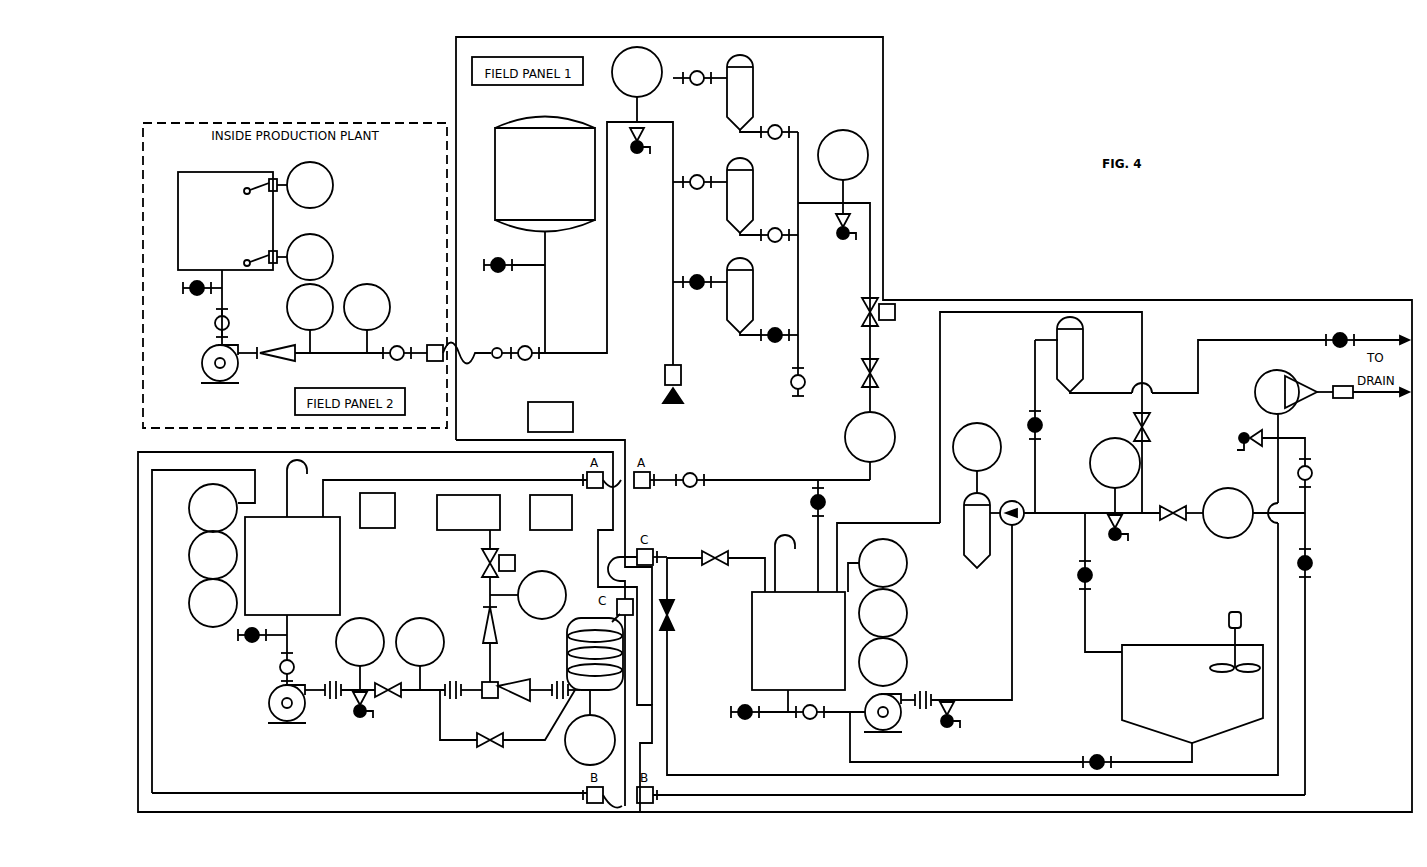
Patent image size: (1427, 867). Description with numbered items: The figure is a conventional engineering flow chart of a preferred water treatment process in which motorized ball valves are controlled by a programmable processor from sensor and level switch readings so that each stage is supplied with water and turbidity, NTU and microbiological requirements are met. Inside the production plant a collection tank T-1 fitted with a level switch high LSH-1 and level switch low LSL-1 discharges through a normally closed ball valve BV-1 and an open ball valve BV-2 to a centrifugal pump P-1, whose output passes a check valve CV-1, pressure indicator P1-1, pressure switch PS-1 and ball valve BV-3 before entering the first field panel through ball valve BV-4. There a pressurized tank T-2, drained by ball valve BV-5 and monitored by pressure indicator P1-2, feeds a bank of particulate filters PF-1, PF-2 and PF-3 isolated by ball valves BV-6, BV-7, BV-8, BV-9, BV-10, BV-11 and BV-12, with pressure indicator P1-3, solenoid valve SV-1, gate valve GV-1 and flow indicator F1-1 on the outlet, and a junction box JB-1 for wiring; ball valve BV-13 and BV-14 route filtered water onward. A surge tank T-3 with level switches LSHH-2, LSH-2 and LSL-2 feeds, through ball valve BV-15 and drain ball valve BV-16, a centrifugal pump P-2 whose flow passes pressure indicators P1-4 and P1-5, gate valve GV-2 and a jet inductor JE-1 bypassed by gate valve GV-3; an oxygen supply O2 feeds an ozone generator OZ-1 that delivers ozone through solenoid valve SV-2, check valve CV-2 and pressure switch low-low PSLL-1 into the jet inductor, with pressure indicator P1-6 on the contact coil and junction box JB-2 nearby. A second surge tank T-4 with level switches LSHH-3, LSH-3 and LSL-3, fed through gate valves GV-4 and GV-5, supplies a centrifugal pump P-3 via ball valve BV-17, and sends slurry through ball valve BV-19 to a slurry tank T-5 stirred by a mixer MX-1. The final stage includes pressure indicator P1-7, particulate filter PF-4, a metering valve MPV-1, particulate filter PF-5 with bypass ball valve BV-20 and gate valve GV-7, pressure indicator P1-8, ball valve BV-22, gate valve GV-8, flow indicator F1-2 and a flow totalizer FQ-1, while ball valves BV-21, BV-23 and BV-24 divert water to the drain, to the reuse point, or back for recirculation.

The collection tank T-1 is at (225, 221).
The pressurized tank T-2 is at (545, 174).
The surge tank T-3 is at (292, 537).
The surge tank T-4 is at (798, 612).
The slurry tank T-5 is at (1192, 694).
The centrifugal pump P-1 is at (220, 377).
The centrifugal pump P-2 is at (287, 719).
The centrifugal pump P-3 is at (883, 724).
The motorized ball valve BV-1 is at (187, 288).
The motorized ball valve BV-2 is at (204, 323).
The motorized ball valve BV-3 is at (396, 362).
The motorized ball valve BV-4 is at (524, 362).
The motorized ball valve BV-5 is at (514, 278).
The motorized ball valve BV-6 is at (700, 87).
The motorized ball valve BV-7 is at (779, 142).
The motorized ball valve BV-8 is at (700, 191).
The motorized ball valve BV-9 is at (779, 245).
The motorized ball valve BV-10 is at (700, 291).
The motorized ball valve BV-11 is at (775, 345).
The motorized ball valve BV-12 is at (776, 382).
The motorized ball valve BV-13 is at (687, 490).
The motorized ball valve BV-14 is at (796, 536).
The motorized ball valve BV-15 is at (307, 667).
The motorized ball valve BV-16 is at (498, 684).
The motorized ball valve BV-17 is at (811, 722).
The motorized ball valve BV-19 is at (1095, 755).
The motorized ball valve BV-20 is at (1056, 426).
The motorized ball valve BV-21 is at (1338, 332).
The motorized ball valve BV-22 is at (1077, 582).
The motorized ball valve BV-23 is at (1327, 473).
The motorized ball valve BV-24 is at (1327, 563).
The check valve CV-1 is at (276, 362).
The check valve CV-2 is at (471, 623).
The gate valve GV-1 is at (853, 373).
The gate valve GV-2 is at (386, 700).
The gate valve GV-3 is at (486, 751).
The gate valve GV-4 is at (713, 568).
The gate valve GV-5 is at (683, 615).
The gate valve GV-7 is at (1158, 427).
The gate valve GV-8 is at (1172, 526).
The solenoid valve SV-1 is at (862, 312).
The solenoid valve SV-2 is at (480, 563).
The jet inductor JE-1 is at (513, 699).
The metering pump valve MPV-1 is at (1030, 523).
The mixer MX-1 is at (1235, 632).
The flow totalizer FQ-1 is at (1332, 392).
The particulate filter PF-1 is at (740, 92).
The particulate filter PF-2 is at (740, 195).
The particulate filter PF-3 is at (740, 295).
The particulate filter PF-4 is at (977, 530).
The particulate filter PF-5 is at (1070, 354).
The pressure indicator P1-1 is at (310, 318).
The pressure indicator P1-2 is at (637, 100).
The pressure indicator P1-3 is at (843, 185).
The pressure indicator P1-4 is at (360, 668).
The pressure indicator P1-5 is at (420, 654).
The pressure indicator P1-6 is at (590, 727).
The pressure indicator P1-7 is at (977, 458).
The pressure indicator P1-8 is at (1115, 489).
The pressure switch PS-1 is at (367, 318).
The pressure switch low-low PSLL-1 is at (528, 595).
The level switch high LSH-1 is at (288, 185).
The level switch low LSL-1 is at (288, 257).
The level switch hi-hi LSHH-2 is at (213, 508).
The level switch high LSH-2 is at (213, 555).
The level switch low LSL-2 is at (213, 603).
The level switch hi-hi LSHH-3 is at (877, 565).
The level switch high LSH-3 is at (883, 613).
The level switch low LSL-3 is at (883, 662).
The flow indicator F1-1 is at (870, 446).
The flow indicator F1-2 is at (1228, 513).
The ozone generator OZ-1 is at (468, 512).
The junction box JB-1 is at (550, 417).
The junction box JB-2 is at (551, 512).
The oxygen supply O2 is at (377, 510).